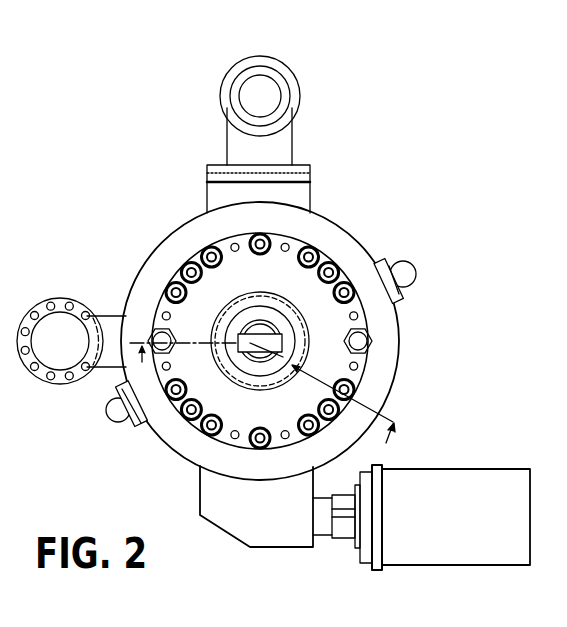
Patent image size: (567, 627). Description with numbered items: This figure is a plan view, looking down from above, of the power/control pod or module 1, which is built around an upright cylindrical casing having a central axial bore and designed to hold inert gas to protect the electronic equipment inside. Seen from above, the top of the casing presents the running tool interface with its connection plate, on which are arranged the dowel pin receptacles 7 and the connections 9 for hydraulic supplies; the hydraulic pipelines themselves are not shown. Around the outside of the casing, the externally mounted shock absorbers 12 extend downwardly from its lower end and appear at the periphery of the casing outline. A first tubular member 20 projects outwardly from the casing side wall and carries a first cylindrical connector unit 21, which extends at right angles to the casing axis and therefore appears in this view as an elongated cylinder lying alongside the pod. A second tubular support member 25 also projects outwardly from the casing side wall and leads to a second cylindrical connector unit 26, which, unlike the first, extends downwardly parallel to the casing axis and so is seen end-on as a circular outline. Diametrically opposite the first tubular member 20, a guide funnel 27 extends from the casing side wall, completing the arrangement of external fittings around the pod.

The power/control pod 1 is at (158, 241).
The dowel pin receptacles 7 is at (156, 331).
The connections for hydraulic supplies 9 is at (314, 254).
The shock absorbers 12 is at (408, 279).
The first tubular member 20 is at (225, 513).
The first cylindrical connector unit 21 is at (405, 487).
The second tubular support member 25 is at (68, 330).
The second cylindrical connector unit 26 is at (30, 368).
The guide funnel 27 is at (272, 68).